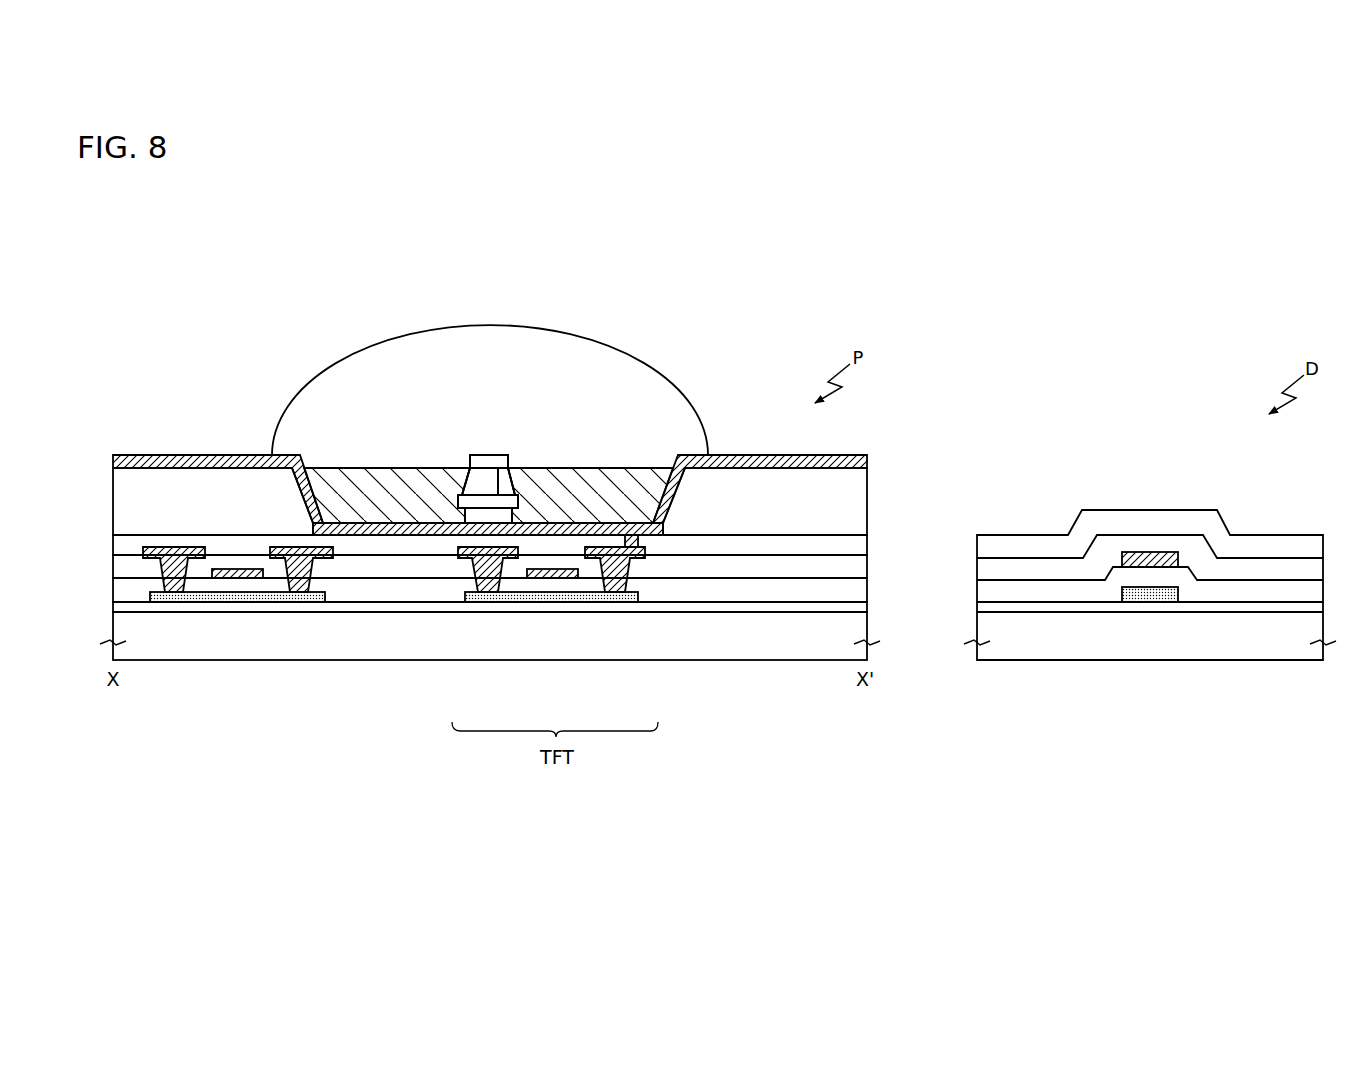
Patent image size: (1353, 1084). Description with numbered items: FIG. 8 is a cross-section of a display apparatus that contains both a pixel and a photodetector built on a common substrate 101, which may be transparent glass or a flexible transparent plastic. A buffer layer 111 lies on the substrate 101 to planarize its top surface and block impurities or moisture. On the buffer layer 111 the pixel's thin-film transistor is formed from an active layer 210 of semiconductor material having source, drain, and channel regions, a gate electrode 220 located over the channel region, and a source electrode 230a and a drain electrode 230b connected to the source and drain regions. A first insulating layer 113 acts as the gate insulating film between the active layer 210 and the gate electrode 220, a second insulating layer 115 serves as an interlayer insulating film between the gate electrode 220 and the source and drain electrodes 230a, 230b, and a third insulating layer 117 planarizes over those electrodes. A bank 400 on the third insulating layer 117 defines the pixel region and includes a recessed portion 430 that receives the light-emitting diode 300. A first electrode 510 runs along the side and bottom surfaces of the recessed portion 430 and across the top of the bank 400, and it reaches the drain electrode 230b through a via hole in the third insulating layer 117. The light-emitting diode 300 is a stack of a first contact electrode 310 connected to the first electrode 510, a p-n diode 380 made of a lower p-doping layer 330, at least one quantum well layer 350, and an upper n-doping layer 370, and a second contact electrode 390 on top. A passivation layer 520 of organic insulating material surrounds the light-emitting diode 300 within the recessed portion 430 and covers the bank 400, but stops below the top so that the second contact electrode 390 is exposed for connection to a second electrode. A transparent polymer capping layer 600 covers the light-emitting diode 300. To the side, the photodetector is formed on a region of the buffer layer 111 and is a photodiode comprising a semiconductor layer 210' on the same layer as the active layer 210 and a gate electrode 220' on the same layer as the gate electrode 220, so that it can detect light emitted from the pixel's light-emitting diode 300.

The substrate 101 is at (866, 629).
The buffer layer 111 is at (866, 606).
The first insulating layer 113 is at (866, 591).
The second insulating layer 115 is at (866, 568).
The third insulating layer 117 is at (866, 545).
The bank 400 is at (866, 521).
The recessed portion 430 is at (598, 494).
The first electrode 510 is at (725, 455).
The passivation layer 520 is at (637, 523).
The light-emitting diode 300 is at (446, 483).
The first contact electrode 310 is at (513, 513).
The lower p-doping layer 330 is at (518, 500).
The quantum well layer 350 is at (498, 493).
The upper n-doping layer 370 is at (487, 462).
The p-n diode 380 is at (427, 376).
The second contact electrode 390 is at (468, 459).
The capping layer 600 is at (490, 325).
The active layer 210 is at (551, 655).
The gate electrode 220 is at (563, 644).
The source electrode 230a is at (487, 592).
The drain electrode 230b is at (612, 592).
The gate electrode of photodetector 220' is at (1150, 510).
The semiconductor layer of photodetector 210' is at (1150, 652).